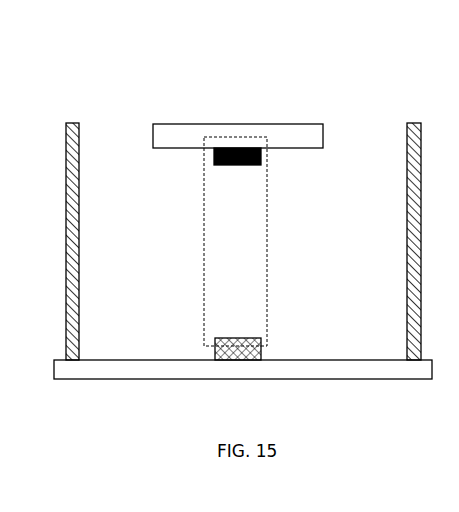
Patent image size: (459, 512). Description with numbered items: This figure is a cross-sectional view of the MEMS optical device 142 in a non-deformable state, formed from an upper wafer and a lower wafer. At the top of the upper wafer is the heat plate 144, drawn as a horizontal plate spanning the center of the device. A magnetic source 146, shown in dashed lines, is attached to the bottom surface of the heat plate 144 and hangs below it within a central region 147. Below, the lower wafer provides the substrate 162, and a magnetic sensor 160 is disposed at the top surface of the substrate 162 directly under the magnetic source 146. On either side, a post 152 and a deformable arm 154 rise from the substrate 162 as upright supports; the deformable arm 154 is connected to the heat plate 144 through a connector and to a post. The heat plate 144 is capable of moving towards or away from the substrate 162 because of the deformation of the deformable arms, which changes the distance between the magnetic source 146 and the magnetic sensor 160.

The MEMS optical device 142 is at (245, 77).
The heat plate 144 is at (162, 137).
The magnetic source 146 is at (235, 145).
The column region 147 is at (204, 275).
The magnetic sensor 160 is at (237, 338).
The deformable arm 154 is at (79, 237).
The post 152 is at (407, 243).
The substrate 162 is at (285, 368).